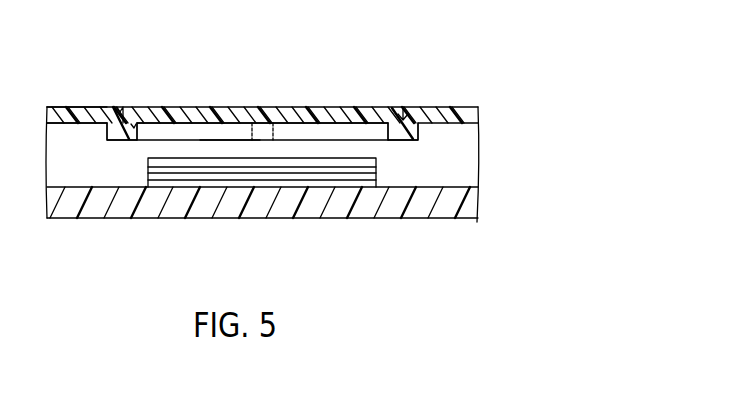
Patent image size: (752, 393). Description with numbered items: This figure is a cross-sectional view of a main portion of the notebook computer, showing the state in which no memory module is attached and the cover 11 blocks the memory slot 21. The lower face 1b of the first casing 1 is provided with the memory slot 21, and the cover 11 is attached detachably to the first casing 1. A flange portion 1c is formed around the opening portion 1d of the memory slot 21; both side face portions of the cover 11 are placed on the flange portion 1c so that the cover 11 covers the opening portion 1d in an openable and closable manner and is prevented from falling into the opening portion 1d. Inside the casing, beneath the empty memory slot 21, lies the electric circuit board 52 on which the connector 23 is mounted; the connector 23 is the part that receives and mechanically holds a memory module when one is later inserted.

The first casing 1 is at (440, 107).
The lower face 1b is at (68, 107).
The flange portion 1c is at (122, 140).
The opening portion 1d is at (307, 132).
The cover 11 is at (167, 107).
The memory slot 21 is at (228, 150).
The connector 23 is at (338, 182).
The electric circuit board 52 is at (220, 203).